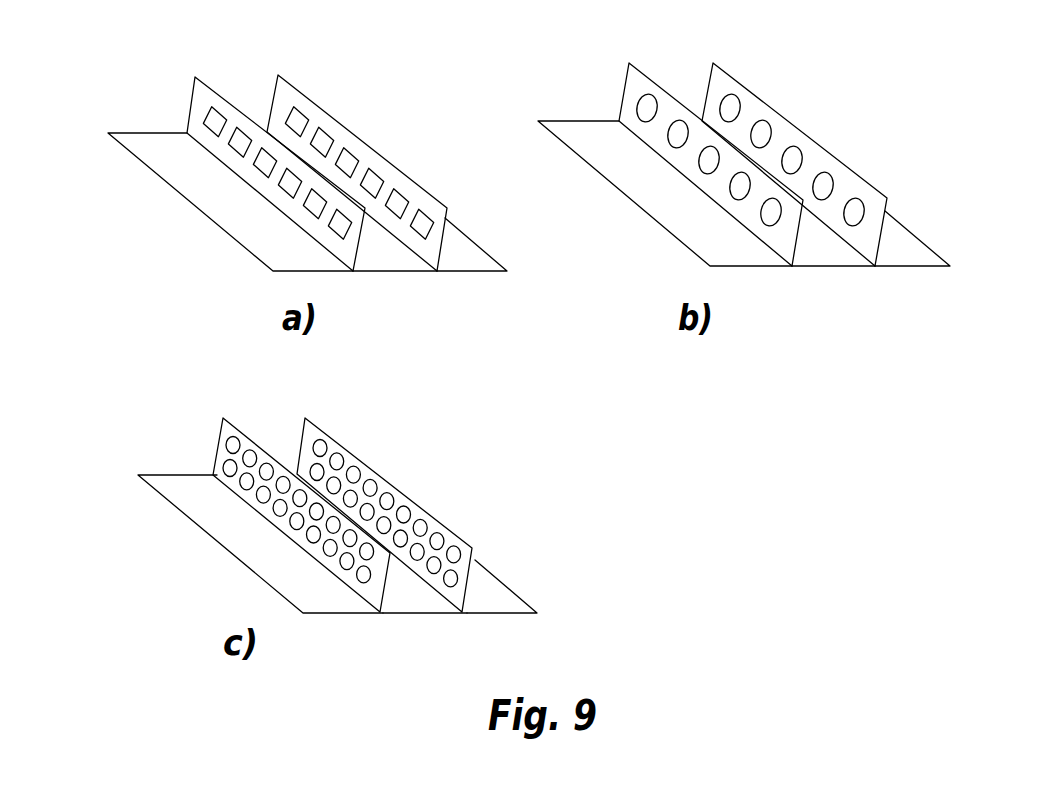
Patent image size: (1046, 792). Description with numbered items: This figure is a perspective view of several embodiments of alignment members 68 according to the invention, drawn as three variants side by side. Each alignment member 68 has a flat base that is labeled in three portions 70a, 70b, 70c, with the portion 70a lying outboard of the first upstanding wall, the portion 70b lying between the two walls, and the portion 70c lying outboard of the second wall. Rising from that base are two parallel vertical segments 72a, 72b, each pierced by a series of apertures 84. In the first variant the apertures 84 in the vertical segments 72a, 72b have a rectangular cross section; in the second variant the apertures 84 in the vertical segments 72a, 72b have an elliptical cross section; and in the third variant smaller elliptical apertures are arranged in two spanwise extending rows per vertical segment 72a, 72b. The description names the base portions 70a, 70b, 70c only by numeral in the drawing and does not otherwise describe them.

The alignment member 68 is at (92, 87).
The base plate portion 70a is at (315, 257).
The base plate portion 70b is at (388, 258).
The base plate portion 70c is at (472, 258).
The vertical segment 72a is at (197, 82).
The vertical segment 72b is at (282, 82).
The aperture 84 is at (413, 213).